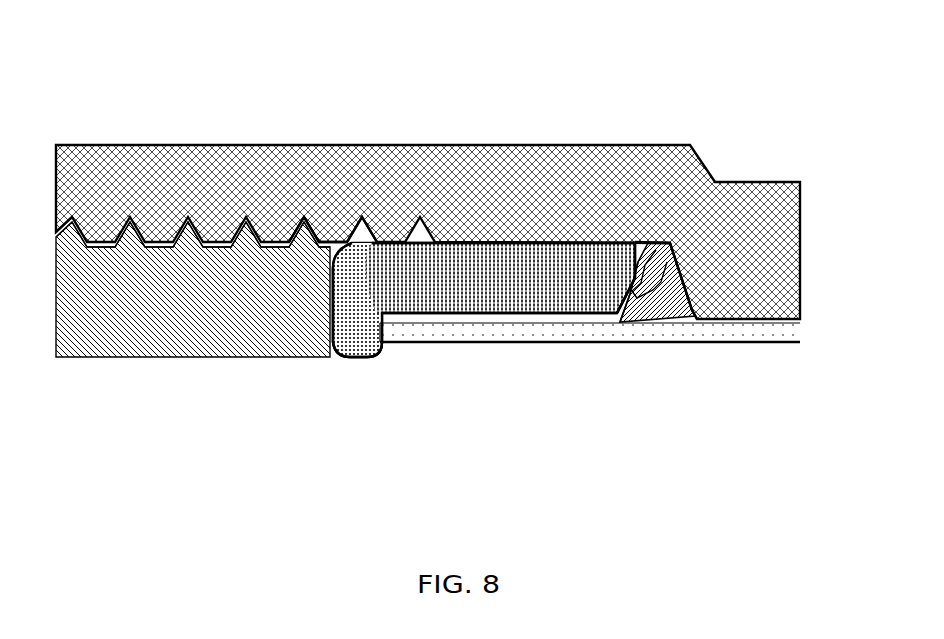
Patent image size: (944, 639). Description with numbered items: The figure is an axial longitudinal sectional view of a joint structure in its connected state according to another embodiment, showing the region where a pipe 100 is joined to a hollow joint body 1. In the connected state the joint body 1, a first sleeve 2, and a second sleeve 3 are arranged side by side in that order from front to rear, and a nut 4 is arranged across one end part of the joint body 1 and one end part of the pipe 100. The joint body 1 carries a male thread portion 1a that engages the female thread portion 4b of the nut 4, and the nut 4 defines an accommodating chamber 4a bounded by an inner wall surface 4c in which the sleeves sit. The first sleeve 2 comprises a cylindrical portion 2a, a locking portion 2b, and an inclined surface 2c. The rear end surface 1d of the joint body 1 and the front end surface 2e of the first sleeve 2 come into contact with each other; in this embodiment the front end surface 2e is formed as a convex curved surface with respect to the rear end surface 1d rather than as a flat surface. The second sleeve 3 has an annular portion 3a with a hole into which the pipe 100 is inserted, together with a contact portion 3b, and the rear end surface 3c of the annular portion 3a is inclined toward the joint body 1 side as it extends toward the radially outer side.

The joint body 1 is at (72, 308).
The male thread portion 1a is at (173, 222).
The rear end surface 1d is at (360, 350).
The first sleeve 2 is at (567, 105).
The cylindrical portion 2a is at (478, 252).
The locking portion 2b is at (357, 297).
The inclined surface 2c is at (652, 248).
The front end surface 2e is at (322, 313).
The second sleeve 3 is at (730, 430).
The annular portion 3a is at (633, 322).
The contact portion 3b is at (623, 298).
The rear end surface 3c is at (690, 293).
The nut 4 is at (262, 165).
The accommodating chamber 4a is at (660, 248).
The female thread portion 4b is at (257, 220).
The inner wall surface 4c is at (652, 245).
The pipe 100 is at (753, 335).